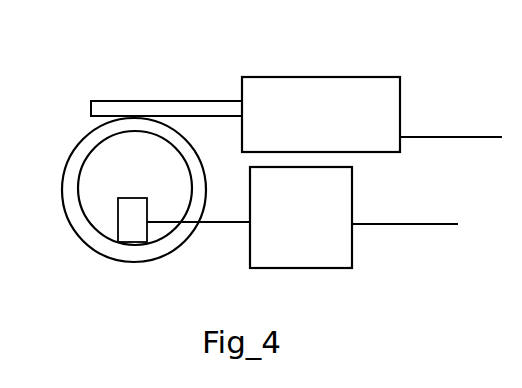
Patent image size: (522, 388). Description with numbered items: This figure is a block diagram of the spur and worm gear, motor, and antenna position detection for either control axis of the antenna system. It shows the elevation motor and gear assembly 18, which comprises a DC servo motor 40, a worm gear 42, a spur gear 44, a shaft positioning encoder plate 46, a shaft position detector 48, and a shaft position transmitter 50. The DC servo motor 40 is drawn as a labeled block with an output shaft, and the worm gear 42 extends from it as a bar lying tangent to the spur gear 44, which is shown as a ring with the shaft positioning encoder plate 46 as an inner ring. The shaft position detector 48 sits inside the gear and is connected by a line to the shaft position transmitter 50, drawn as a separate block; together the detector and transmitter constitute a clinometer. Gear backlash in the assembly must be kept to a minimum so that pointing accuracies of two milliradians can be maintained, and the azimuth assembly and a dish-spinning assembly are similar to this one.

The elevation motor and gear assembly 18 is at (297, 63).
The DC servo motor 40 is at (390, 77).
The worm gear 42 is at (150, 101).
The spur gear 44 is at (70, 222).
The shaft positioning encoder plate 46 is at (182, 152).
The shaft position detector 48 is at (125, 198).
The shaft position transmitter 50 is at (250, 268).